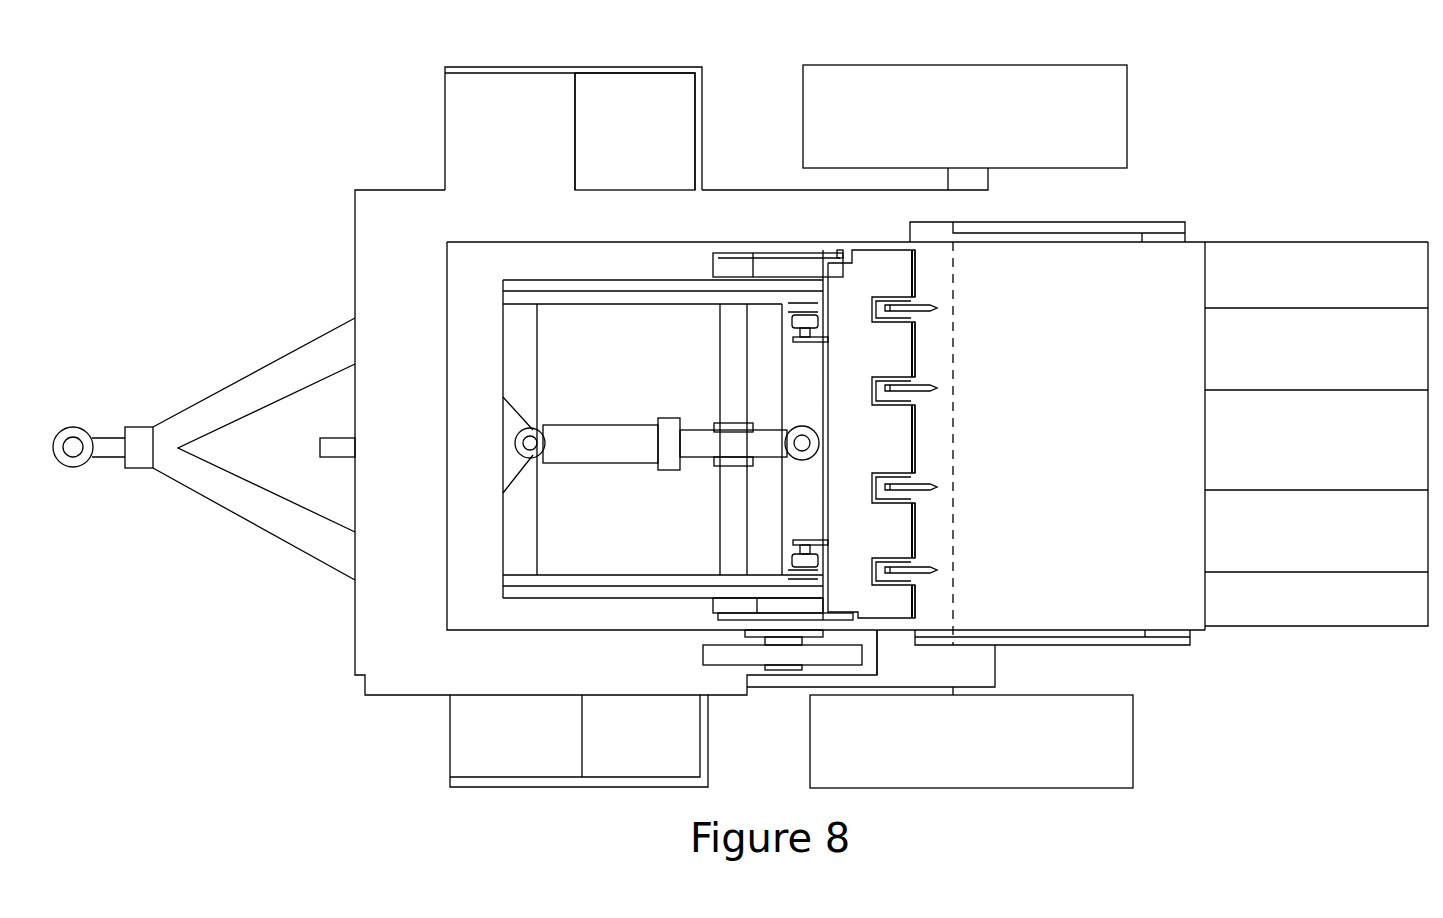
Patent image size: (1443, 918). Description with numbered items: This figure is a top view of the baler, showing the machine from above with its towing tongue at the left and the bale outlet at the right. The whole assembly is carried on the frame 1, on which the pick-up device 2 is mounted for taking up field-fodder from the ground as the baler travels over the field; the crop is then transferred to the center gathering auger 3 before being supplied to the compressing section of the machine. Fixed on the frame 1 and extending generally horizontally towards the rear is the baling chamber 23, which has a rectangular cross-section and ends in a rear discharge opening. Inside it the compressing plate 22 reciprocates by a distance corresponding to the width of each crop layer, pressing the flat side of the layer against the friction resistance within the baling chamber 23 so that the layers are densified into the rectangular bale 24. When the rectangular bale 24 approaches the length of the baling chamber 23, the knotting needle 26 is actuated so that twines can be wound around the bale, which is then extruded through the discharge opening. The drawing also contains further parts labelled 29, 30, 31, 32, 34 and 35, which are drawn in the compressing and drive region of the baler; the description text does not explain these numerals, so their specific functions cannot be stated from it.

The frame 1 is at (382, 289).
The pick-up device 2 is at (478, 93).
The center gathering auger 3 is at (614, 92).
The compressing plate 22 is at (792, 305).
The baling chamber 23 is at (1160, 268).
The rectangular bale 24 is at (1308, 557).
The knotting needle 26 is at (916, 481).
The chute body 29 is at (898, 360).
The chute edge 30 is at (917, 340).
The bearing 31 is at (786, 325).
The hydraulic cylinder 32 is at (585, 457).
The inner frame 34 is at (598, 292).
The mounting box 35 is at (763, 250).